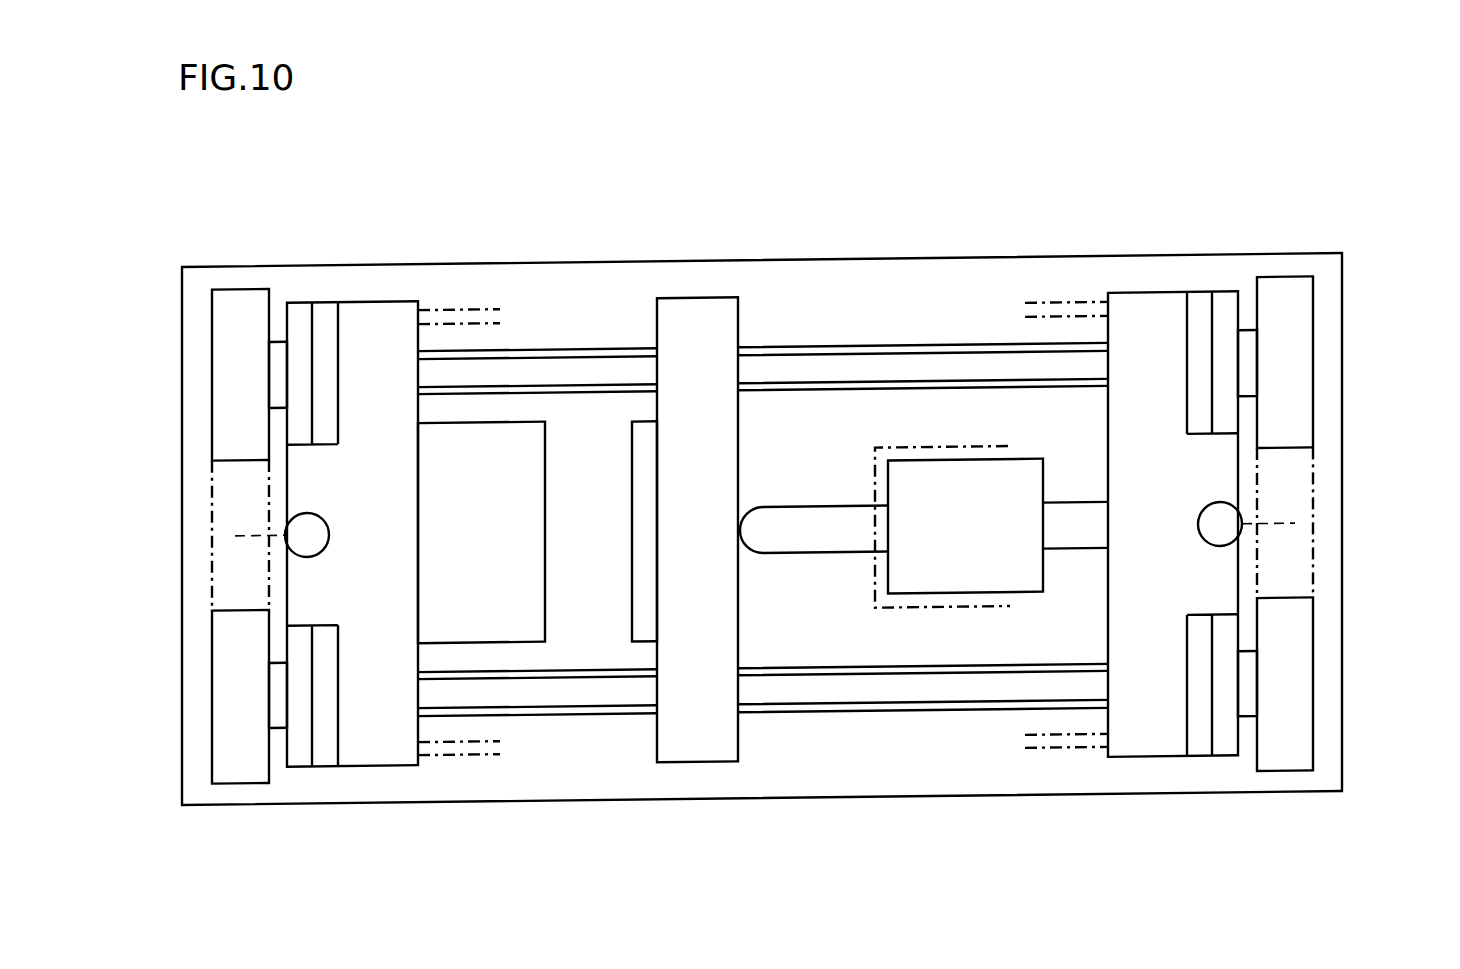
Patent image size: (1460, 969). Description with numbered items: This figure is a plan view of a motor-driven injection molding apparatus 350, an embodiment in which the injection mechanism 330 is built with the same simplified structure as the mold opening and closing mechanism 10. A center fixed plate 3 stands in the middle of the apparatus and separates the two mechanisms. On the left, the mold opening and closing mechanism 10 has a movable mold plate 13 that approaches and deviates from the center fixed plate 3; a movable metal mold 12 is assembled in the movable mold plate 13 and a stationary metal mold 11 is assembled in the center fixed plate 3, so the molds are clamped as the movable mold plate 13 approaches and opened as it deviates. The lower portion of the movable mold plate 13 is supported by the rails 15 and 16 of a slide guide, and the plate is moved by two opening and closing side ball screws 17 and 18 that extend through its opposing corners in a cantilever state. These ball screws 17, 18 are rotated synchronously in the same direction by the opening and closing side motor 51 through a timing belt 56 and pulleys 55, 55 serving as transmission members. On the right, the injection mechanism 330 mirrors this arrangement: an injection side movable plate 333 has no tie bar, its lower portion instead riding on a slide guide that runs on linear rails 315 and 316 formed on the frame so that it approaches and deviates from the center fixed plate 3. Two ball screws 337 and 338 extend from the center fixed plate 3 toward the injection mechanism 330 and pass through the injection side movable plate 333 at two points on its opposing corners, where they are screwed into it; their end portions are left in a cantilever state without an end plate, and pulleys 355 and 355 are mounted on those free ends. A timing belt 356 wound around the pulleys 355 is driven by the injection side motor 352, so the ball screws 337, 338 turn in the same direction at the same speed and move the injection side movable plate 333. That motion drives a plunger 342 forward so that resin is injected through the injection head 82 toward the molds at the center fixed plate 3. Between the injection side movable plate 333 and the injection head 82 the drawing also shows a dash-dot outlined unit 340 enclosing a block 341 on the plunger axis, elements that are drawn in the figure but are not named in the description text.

The mold opening and closing mechanism portion 10 is at (481, 205).
The center fixed plate 3 is at (690, 318).
The stationary metal mold 11 is at (635, 563).
The movable metal mold 12 is at (528, 502).
The movable mold plate 13 is at (365, 310).
The rail 15 is at (436, 316).
The rail 16 is at (452, 751).
The opening and closing side ball screw 17 is at (550, 369).
The opening and closing side ball screw 18 is at (530, 701).
The opening and closing side motor 51 is at (309, 561).
The pulley 55 is at (219, 332).
The timing belt 56 is at (215, 489).
The injection head 82 is at (800, 555).
The linear rail 315 is at (1063, 318).
The linear rail 316 is at (1058, 758).
The injection mechanism 330 is at (1008, 245).
The injection side movable plate 333 is at (1170, 312).
The ball screw 337 is at (836, 368).
The ball screw 338 is at (880, 706).
The transfer unit 340 is at (912, 454).
The transfer block 341 is at (985, 478).
The plunger 342 is at (1088, 551).
The motor-driven injection molding apparatus 350 is at (1154, 153).
The injection side motor 352 is at (1220, 514).
The pulley 355 is at (1303, 332).
The timing belt 356 is at (1305, 492).